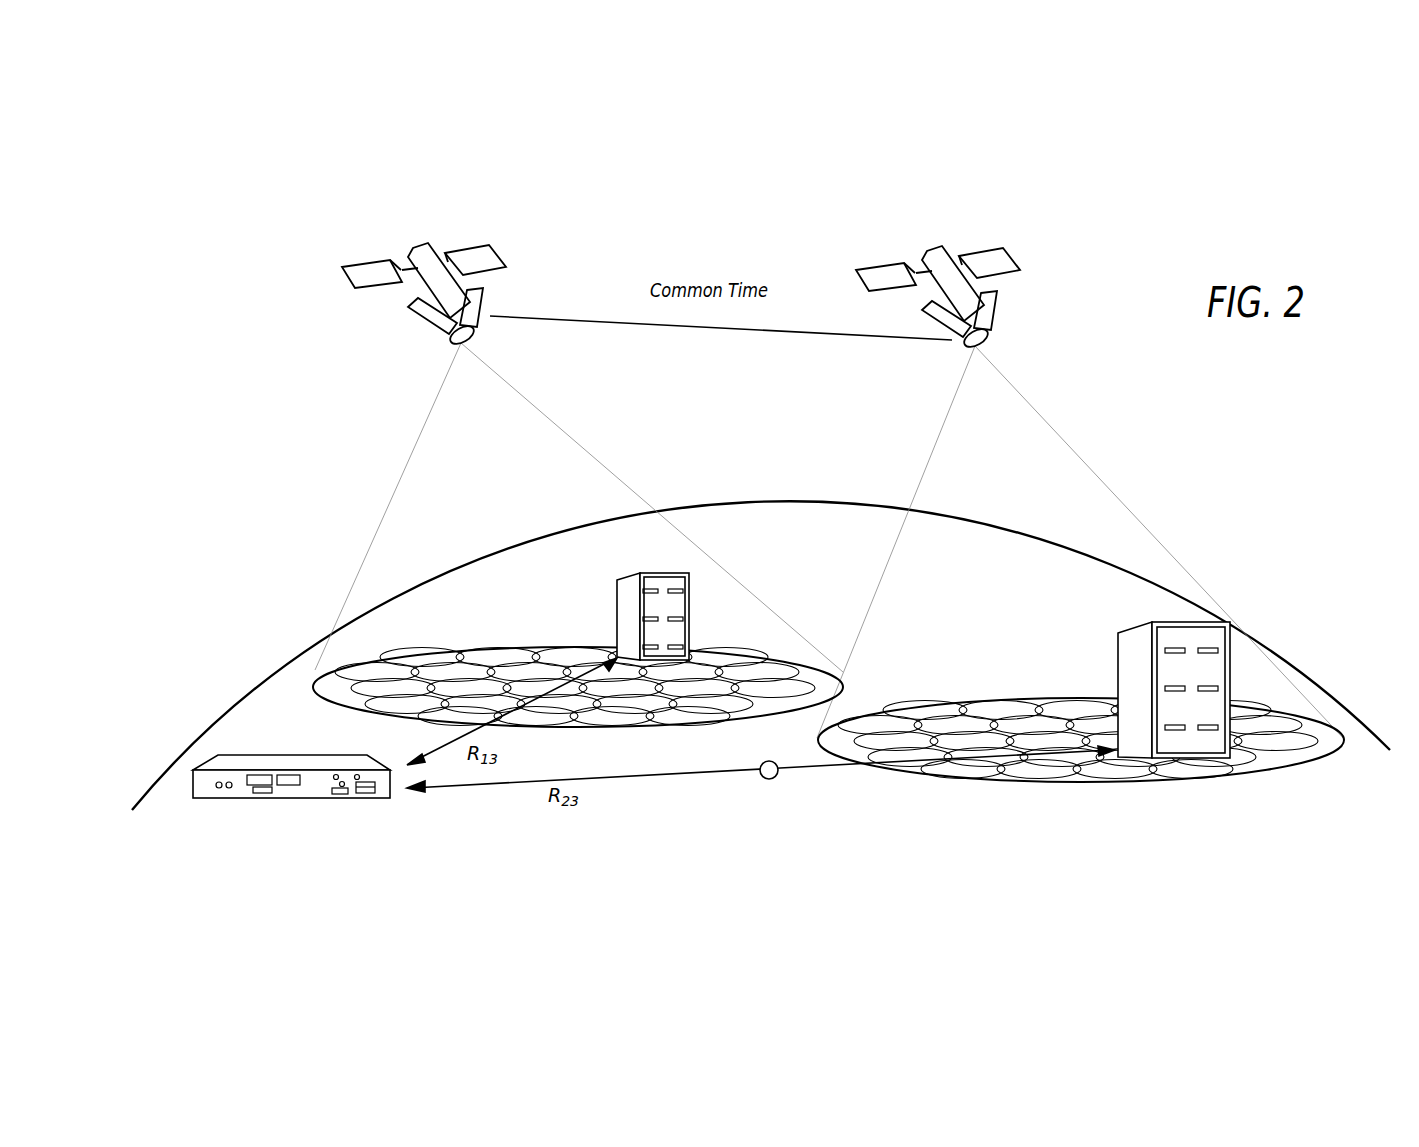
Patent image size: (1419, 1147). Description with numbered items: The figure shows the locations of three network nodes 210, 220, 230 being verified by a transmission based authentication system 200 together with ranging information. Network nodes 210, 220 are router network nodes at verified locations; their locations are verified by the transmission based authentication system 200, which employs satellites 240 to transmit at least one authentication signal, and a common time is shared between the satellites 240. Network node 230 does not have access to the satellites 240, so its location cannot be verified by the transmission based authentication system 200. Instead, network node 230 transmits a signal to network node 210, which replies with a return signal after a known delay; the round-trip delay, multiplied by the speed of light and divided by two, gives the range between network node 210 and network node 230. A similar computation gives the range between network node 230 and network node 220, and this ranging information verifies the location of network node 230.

The transmission based authentication system 200 is at (1190, 488).
The network node 210 is at (627, 600).
The network node 220 is at (1138, 668).
The network node 230 is at (273, 758).
The satellite 240 is at (420, 290).